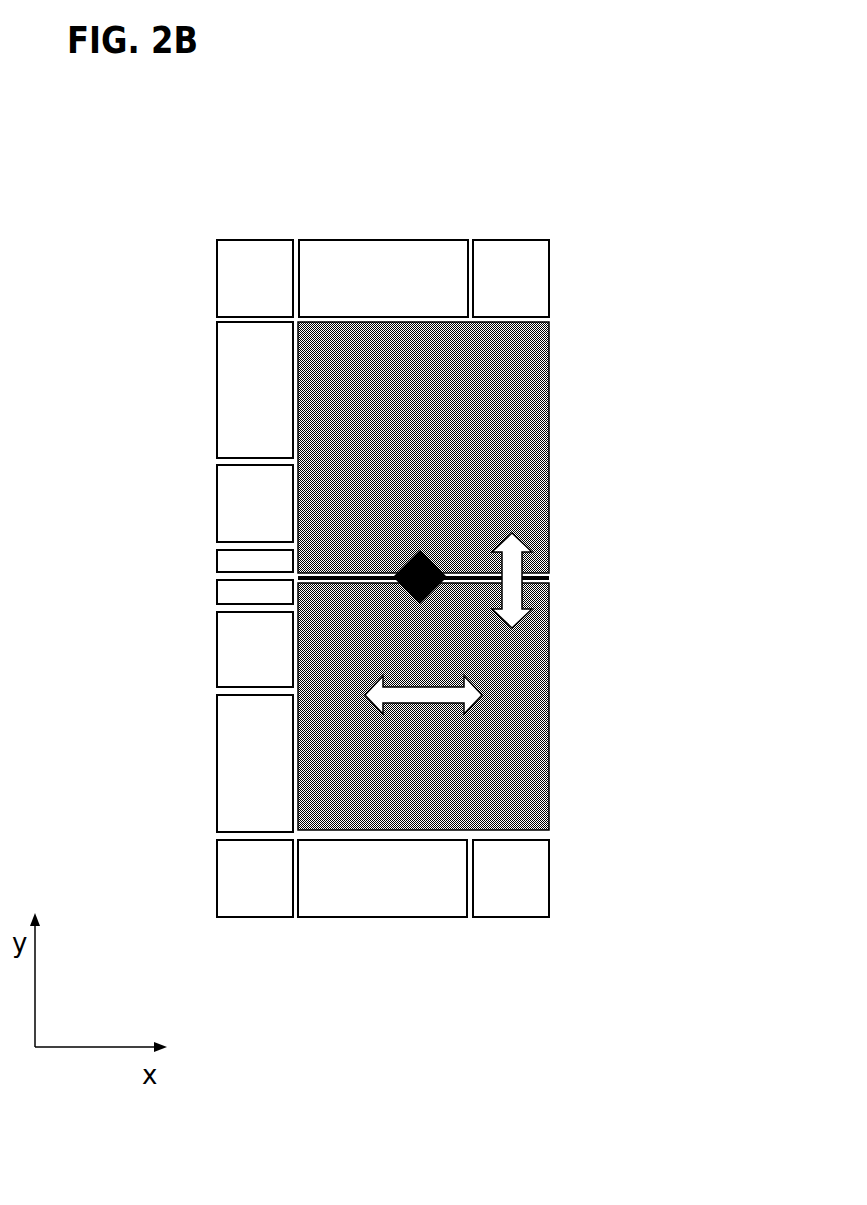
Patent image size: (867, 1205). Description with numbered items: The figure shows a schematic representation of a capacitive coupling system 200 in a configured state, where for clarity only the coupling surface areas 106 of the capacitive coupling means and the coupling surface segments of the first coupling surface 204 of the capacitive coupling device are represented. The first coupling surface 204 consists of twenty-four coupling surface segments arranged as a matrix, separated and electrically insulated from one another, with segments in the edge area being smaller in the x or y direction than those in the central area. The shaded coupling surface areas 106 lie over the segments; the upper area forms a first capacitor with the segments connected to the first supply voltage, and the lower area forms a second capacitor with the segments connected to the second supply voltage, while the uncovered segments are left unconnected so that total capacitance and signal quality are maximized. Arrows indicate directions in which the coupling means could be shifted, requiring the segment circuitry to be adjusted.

The capacitive coupling system 200 is at (630, 195).
The first coupling surface 204 is at (202, 238).
The coupling surface areas 106 is at (514, 576).